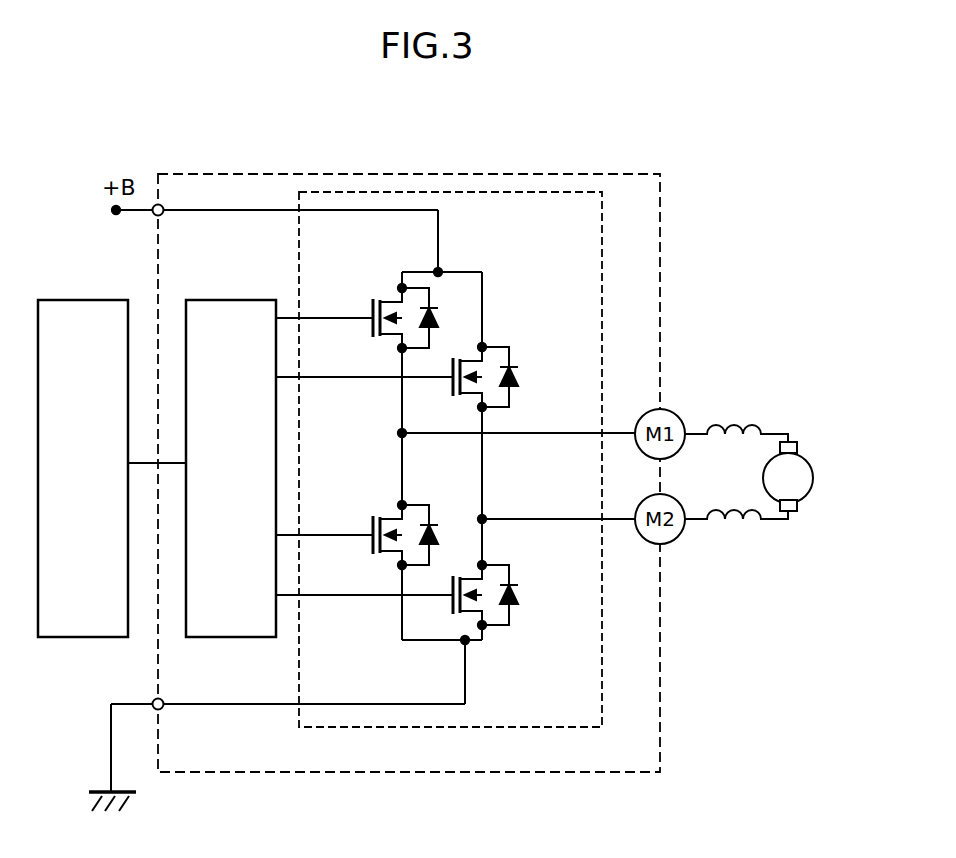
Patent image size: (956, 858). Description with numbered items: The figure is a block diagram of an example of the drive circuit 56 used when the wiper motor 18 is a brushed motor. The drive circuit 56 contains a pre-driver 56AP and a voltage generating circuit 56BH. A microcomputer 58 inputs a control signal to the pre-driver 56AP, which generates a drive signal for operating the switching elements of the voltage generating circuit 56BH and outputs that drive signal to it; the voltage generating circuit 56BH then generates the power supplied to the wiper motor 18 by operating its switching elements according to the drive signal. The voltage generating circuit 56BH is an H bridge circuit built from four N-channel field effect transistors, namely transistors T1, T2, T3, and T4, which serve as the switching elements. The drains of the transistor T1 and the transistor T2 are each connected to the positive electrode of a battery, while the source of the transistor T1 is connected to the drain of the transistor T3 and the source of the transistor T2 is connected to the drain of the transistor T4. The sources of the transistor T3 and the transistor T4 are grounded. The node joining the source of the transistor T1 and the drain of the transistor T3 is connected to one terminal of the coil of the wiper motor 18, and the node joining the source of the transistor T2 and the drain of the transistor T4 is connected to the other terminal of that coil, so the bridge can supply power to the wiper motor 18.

The drive circuit 56 is at (222, 174).
The voltage generating circuit 56BH is at (497, 192).
The pre-driver 56AP is at (230, 300).
The microcomputer 58 is at (80, 300).
The wiper motor 18 is at (805, 493).
The transistor T1 is at (403, 298).
The transistor T2 is at (509, 363).
The transistor T3 is at (403, 516).
The transistor T4 is at (509, 615).